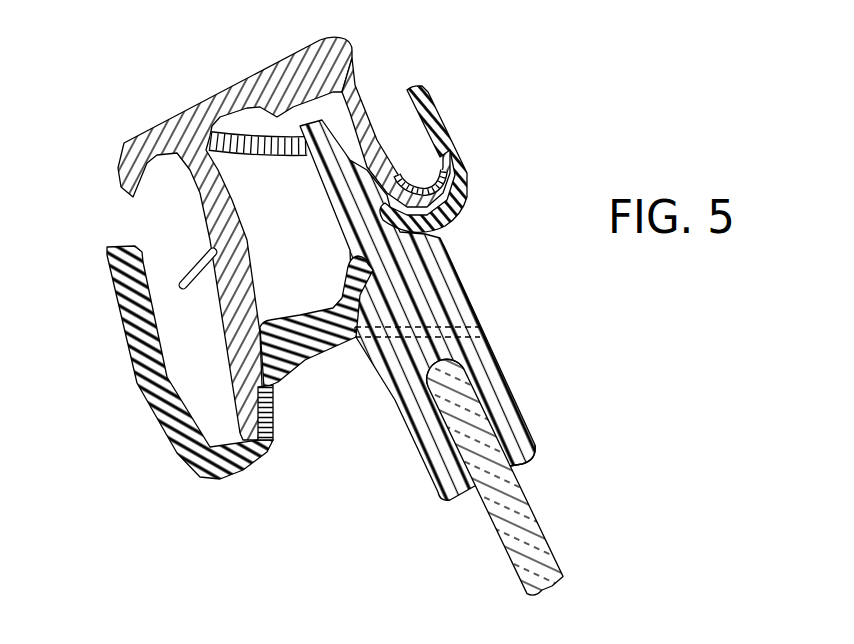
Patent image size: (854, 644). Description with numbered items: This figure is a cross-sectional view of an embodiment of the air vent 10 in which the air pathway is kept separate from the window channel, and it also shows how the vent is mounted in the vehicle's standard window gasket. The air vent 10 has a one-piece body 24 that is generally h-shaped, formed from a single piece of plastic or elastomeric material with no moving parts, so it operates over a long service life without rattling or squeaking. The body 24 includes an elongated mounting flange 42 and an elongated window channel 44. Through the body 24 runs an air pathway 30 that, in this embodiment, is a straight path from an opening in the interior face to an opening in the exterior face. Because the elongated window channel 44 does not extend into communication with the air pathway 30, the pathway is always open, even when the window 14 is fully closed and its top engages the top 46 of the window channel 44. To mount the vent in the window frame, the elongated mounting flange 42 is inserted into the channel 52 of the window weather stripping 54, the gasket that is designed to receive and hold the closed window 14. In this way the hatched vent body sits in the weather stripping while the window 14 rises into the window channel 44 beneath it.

The air vent 10 is at (301, 461).
The window 14 is at (523, 527).
The one-piece body 24 is at (417, 274).
The air pathway 30 is at (452, 326).
The elongated mounting flange 42 is at (343, 184).
The elongated window channel 44 is at (505, 450).
The top of the window channel 46 is at (447, 380).
The channel 52 is at (277, 218).
The window weather stripping 54 is at (367, 104).